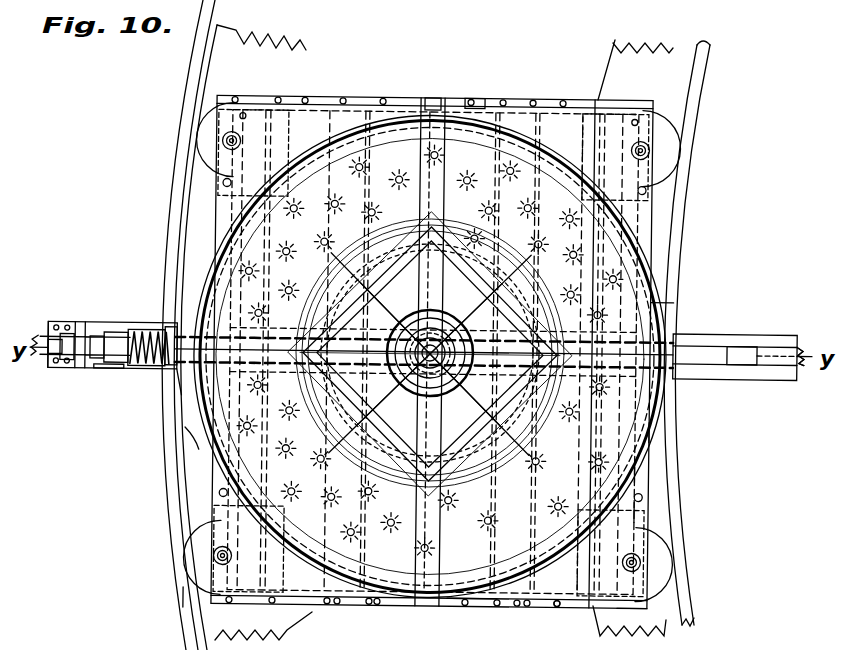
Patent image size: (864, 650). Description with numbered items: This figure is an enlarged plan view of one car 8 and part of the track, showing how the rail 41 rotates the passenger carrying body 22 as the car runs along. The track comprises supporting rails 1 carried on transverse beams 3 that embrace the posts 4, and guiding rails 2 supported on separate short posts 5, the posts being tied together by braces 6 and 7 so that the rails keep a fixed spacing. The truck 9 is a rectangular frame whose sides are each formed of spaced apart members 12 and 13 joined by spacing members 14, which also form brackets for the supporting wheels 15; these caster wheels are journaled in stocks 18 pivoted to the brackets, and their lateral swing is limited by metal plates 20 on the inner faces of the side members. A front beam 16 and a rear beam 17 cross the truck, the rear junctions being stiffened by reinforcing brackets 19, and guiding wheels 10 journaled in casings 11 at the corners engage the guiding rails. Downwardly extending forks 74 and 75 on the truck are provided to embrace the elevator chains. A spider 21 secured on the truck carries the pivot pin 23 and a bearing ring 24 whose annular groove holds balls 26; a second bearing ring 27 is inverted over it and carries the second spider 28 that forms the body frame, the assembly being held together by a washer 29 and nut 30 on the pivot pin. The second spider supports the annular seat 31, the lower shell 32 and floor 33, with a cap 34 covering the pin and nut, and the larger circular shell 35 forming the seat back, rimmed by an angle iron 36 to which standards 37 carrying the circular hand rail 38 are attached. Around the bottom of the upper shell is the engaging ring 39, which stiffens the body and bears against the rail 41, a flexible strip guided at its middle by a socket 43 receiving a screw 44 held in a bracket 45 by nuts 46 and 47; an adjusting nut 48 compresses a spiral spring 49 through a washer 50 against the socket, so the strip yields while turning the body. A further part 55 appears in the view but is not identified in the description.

The supporting rails 1 is at (427, 337).
The guiding rails 2 is at (200, 84).
The transverse beams 3 is at (430, 357).
The posts 4 is at (778, 346).
The short posts 5 is at (698, 346).
The braces 6 is at (752, 336).
The braces 7 is at (710, 378).
The car 8 is at (655, 470).
The truck 9 is at (648, 510).
The guiding wheels 10 is at (193, 140).
The casings 11 is at (302, 104).
The spaced apart members 12 is at (447, 352).
The spaced apart members 13 is at (262, 272).
The spacing members 14 is at (203, 240).
The supporting wheels 15 is at (226, 183).
The front beam 16 is at (470, 606).
The rear beam 17 is at (500, 100).
The stocks 18 is at (258, 125).
The reinforcing brackets 19 is at (226, 101).
The metal plates 20 is at (222, 132).
The spider 21 is at (466, 176).
The passenger carrying body 22 is at (660, 430).
The pivot pin 23 is at (530, 310).
The bearing ring 24 is at (516, 353).
The balls 26 is at (471, 352).
The second bearing ring 27 is at (387, 351).
The second spider 28 is at (504, 380).
The washer 29 is at (348, 351).
The nut 30 is at (532, 420).
The annular seat 31 is at (308, 350).
The shell 32 is at (521, 353).
The floor 33 is at (429, 352).
The cap 34 is at (415, 332).
The circular shell 35 is at (640, 615).
The angle iron 36 is at (178, 398).
The standards 37 is at (432, 606).
The hand rail 38 is at (196, 440).
The engaging ring 39 is at (700, 300).
The rail 41 is at (186, 600).
The socket 43 is at (160, 372).
The screw 44 is at (135, 328).
The bracket 45 is at (80, 328).
The nut 46 is at (96, 328).
The nut 47 is at (56, 326).
The adjusting nut 48 is at (140, 326).
The spiral spring 49 is at (92, 396).
The washer 50 is at (98, 372).
The bottom screw 55 is at (520, 608).
The fork 74 is at (432, 98).
The fork 75 is at (472, 98).